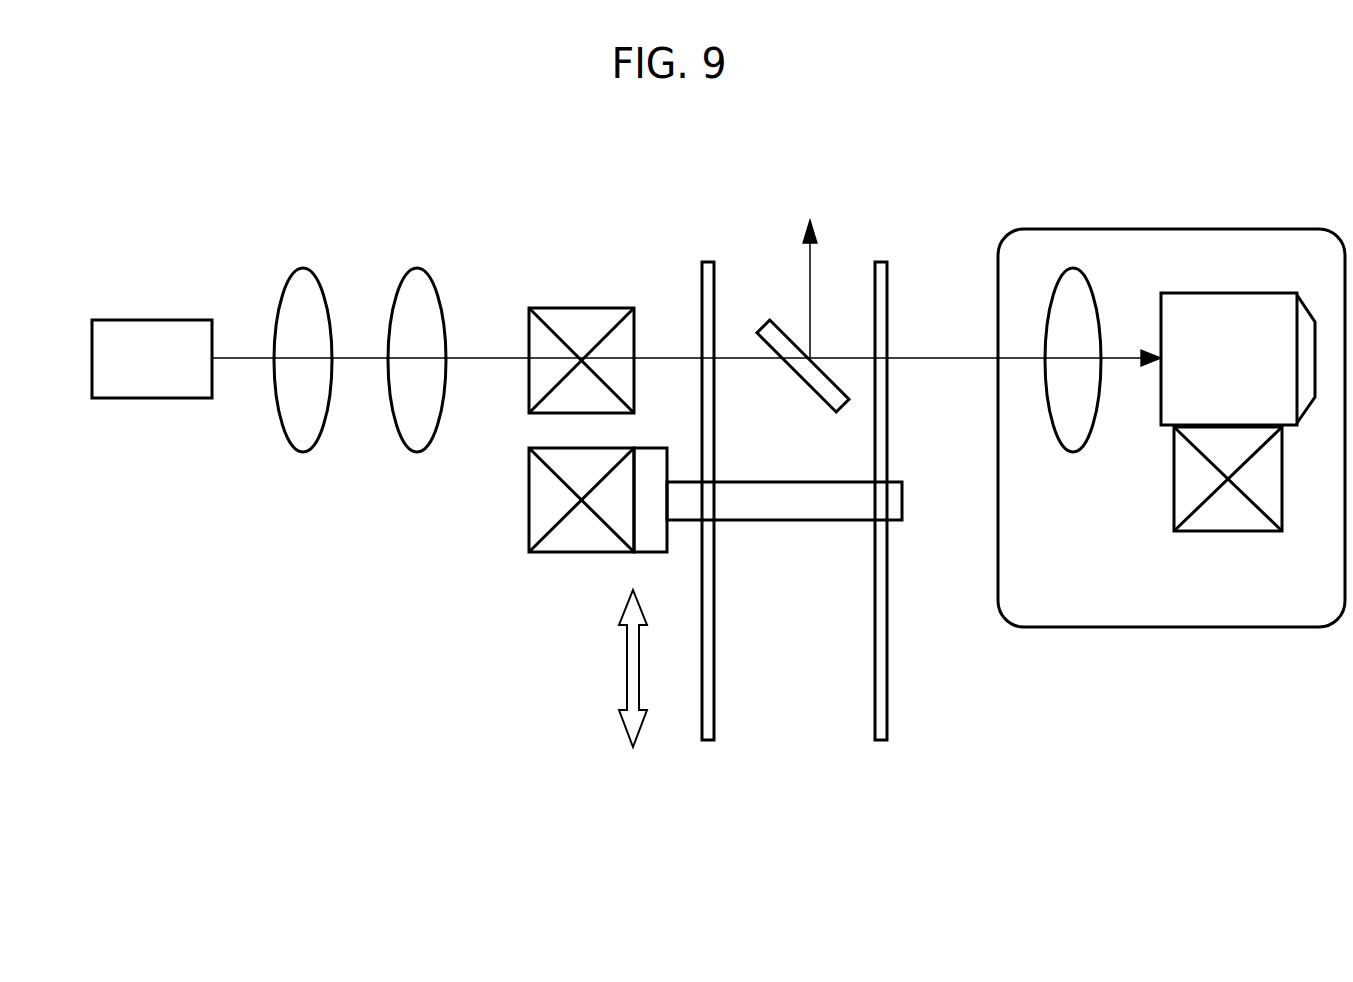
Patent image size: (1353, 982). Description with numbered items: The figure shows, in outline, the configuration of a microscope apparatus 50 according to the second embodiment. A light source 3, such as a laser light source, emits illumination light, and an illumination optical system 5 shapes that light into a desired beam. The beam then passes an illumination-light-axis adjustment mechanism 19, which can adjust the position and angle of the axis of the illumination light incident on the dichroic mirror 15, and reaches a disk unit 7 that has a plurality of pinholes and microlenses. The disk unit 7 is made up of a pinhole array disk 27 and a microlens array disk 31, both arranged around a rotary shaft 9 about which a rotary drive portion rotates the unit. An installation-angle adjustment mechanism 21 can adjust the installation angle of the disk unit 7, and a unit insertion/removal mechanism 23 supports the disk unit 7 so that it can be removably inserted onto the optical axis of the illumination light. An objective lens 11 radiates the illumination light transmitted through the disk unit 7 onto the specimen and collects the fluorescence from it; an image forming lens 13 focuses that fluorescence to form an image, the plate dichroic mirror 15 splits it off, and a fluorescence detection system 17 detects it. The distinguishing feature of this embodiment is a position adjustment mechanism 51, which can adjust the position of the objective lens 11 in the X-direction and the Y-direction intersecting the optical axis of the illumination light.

The light source 3 is at (161, 398).
The illumination optical system 5 is at (455, 470).
The disk unit 7 is at (826, 537).
The rotary shaft 9 is at (902, 497).
The objective lens 11 is at (1229, 293).
The image forming lens 13 is at (1073, 269).
The plate dichroic mirror 15 is at (797, 381).
The fluorescence detection system 17 is at (811, 256).
The illumination-light-axis adjustment mechanism 19 is at (568, 308).
The installation-angle adjustment mechanism 21 is at (570, 552).
The unit insertion/removal mechanism 23 is at (627, 683).
The pinhole array disk 27 is at (923, 501).
The microlens array disk 31 is at (714, 670).
The microscope apparatus 50 is at (364, 681).
The position adjustment mechanism 51 is at (1226, 531).